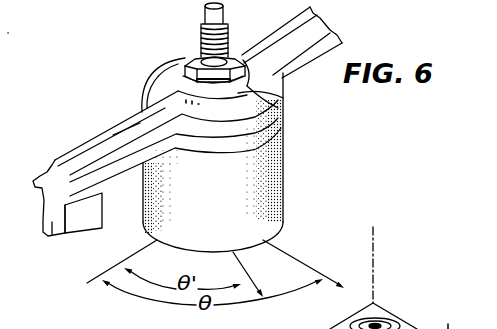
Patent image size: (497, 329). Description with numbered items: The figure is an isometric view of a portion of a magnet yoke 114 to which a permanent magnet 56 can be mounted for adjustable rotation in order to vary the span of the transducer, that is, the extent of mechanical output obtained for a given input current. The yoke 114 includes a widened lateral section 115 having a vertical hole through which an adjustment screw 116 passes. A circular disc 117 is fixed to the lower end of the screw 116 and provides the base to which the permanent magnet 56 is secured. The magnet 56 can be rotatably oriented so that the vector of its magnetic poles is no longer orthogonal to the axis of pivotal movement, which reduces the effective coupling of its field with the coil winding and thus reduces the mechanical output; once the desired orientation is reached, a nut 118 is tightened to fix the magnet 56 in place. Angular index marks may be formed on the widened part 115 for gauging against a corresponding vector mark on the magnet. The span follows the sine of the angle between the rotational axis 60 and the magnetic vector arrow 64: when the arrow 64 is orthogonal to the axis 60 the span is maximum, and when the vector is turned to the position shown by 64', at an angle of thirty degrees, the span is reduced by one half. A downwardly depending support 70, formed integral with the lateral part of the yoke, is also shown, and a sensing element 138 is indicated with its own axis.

The magnet yoke 114 is at (108, 94).
The widened lateral section 115 is at (283, 98).
The adjustment screw 116 is at (203, 17).
The circular disc 117 is at (283, 152).
The nut 118 is at (233, 57).
The permanent magnet 56 is at (219, 205).
The rotational axis 60 is at (140, 249).
The magnetic vector arrow 64 is at (309, 259).
The magnetic vector arrow at reduced angle 64' is at (257, 274).
The downwardly depending support 70 is at (52, 236).
The sensor axis 138 is at (375, 272).